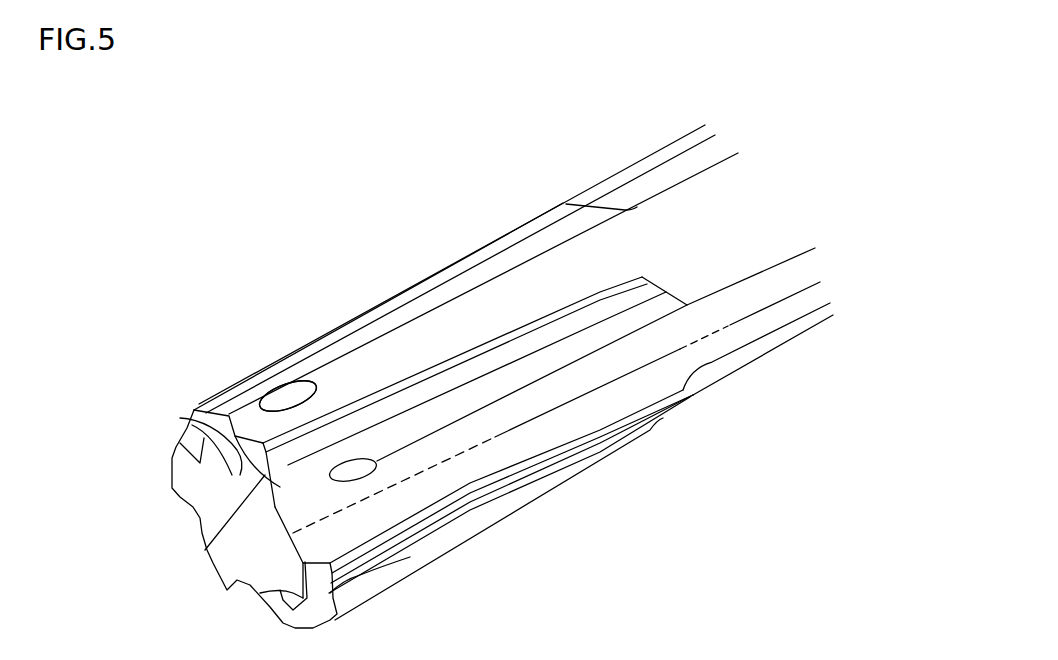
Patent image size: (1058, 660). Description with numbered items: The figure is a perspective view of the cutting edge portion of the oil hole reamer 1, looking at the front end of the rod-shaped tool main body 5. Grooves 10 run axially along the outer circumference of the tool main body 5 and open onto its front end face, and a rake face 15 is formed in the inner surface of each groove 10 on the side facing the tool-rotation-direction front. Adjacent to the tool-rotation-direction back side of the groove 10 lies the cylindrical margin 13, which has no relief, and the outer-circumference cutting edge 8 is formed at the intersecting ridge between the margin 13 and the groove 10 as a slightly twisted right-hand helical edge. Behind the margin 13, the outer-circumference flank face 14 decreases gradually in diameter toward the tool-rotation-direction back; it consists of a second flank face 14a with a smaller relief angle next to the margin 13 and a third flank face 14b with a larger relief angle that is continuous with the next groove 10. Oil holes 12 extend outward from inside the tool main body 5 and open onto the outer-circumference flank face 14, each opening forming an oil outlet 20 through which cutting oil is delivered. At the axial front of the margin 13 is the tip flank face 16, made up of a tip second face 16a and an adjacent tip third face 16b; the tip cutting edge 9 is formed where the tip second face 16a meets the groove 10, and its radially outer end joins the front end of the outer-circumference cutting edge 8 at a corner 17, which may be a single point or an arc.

The reamer 1 is at (627, 170).
The tool main body 5 is at (600, 459).
The outer-circumference cutting edge 8 is at (397, 388).
The tip cutting edge 9 is at (187, 427).
The groove 10 is at (752, 297).
The oil hole 12 is at (285, 393).
The oil outlet 20 is at (312, 386).
The margin 13 is at (453, 365).
The outer-circumference flank face 14 is at (520, 196).
The second flank face 14a is at (510, 348).
The third flank face 14b is at (553, 360).
The rake face 15 is at (503, 462).
The tip flank face 16 is at (118, 508).
The tip second face 16a is at (280, 487).
The tip third face 16b is at (265, 478).
The corner 17 is at (238, 397).